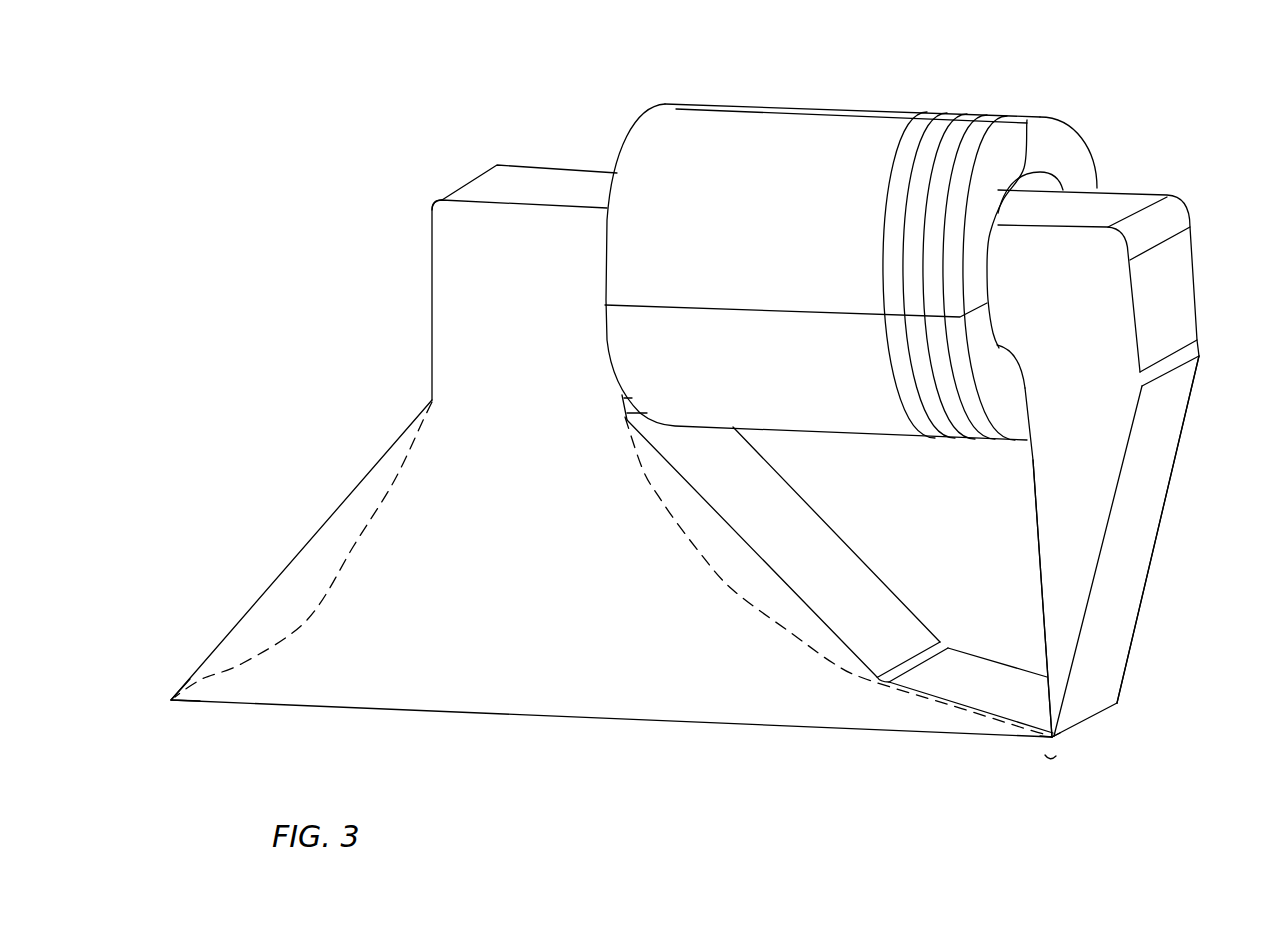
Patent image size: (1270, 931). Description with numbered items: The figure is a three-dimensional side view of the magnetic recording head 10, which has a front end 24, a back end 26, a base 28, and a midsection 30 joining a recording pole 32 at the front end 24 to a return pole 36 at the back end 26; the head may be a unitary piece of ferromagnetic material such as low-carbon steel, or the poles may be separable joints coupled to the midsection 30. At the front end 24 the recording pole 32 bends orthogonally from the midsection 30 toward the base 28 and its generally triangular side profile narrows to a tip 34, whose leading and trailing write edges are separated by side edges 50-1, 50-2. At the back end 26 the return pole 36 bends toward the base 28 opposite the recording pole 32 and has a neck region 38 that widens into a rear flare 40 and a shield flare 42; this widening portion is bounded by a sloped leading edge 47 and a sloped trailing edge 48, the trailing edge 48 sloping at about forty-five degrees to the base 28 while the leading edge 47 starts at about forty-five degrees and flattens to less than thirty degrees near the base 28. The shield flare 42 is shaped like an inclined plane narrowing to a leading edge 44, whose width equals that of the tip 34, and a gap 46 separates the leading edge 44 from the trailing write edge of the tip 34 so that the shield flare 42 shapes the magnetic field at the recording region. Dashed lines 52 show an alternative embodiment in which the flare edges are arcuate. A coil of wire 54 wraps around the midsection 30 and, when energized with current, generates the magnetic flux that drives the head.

The magnetic recording head 10 is at (290, 119).
The front end 24 is at (1226, 203).
The back end 26 is at (170, 150).
The base 28 is at (637, 722).
The midsection 30 is at (1021, 307).
The recording pole 32 is at (1064, 421).
The tip 34 is at (1103, 715).
The return pole 36 is at (543, 420).
The neck region 38 is at (428, 397).
The rear flare 40 is at (210, 667).
The shield flare 42 is at (972, 699).
The leading edge 44 is at (1053, 737).
The gap 46 is at (1053, 767).
The sloped leading edge 47 is at (822, 557).
The sloped trailing edge 48 is at (295, 558).
The side edge 50-1 is at (1145, 673).
The side edge 50-2 is at (1060, 713).
The dashed lines 52 is at (350, 553).
The coil of wire 54 is at (810, 247).